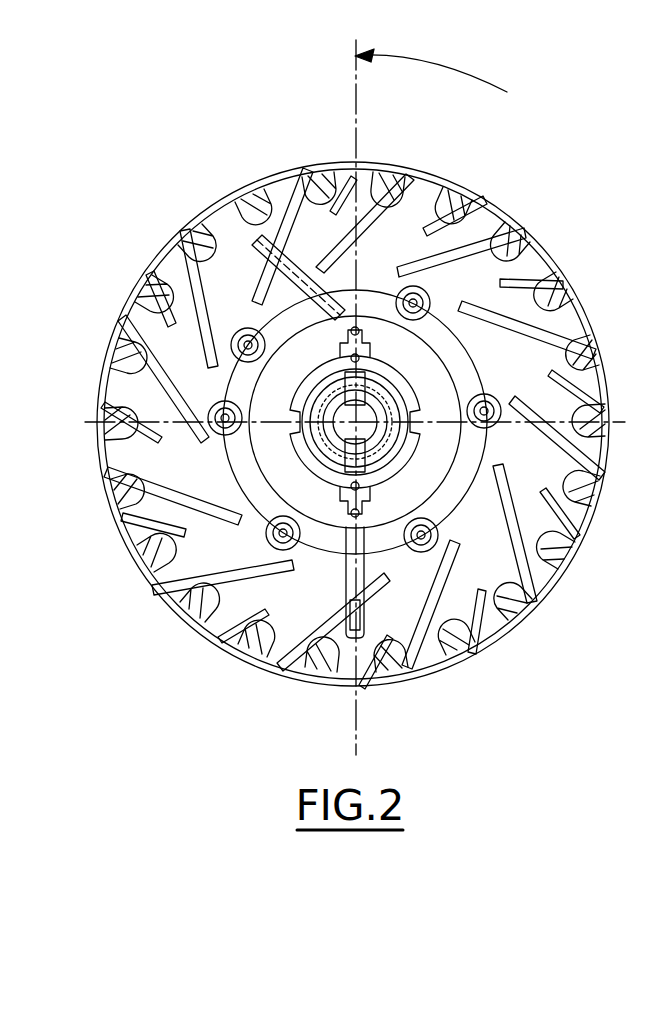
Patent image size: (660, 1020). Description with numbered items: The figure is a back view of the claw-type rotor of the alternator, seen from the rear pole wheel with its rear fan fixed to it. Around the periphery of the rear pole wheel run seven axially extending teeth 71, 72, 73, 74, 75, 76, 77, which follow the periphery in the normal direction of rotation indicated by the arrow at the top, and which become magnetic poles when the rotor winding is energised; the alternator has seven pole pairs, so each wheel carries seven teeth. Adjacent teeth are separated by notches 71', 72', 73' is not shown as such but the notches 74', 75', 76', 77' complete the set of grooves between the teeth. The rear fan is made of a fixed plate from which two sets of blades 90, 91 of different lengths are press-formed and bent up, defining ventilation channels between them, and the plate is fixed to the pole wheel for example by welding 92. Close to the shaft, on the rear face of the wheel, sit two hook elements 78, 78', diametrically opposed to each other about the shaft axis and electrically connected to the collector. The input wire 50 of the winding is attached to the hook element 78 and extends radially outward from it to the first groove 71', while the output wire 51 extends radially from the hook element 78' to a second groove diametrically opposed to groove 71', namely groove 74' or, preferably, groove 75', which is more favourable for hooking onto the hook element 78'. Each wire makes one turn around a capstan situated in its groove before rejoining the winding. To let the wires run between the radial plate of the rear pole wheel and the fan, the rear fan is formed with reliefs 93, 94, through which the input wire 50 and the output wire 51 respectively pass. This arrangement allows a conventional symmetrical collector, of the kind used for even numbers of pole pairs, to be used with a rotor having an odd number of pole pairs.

The input wire 50 is at (420, 683).
The output wire 51 is at (320, 200).
The tooth 71 is at (470, 621).
The notch 71' is at (394, 688).
The tooth 72 is at (579, 474).
The notch 72' is at (559, 550).
The tooth 73 is at (547, 247).
The tooth 74 is at (365, 182).
The notch 74' is at (489, 171).
The tooth 75 is at (183, 264).
The notch 75' is at (276, 198).
The tooth 76 is at (149, 504).
The notch 76' is at (139, 354).
The tooth 77 is at (295, 652).
The notch 77' is at (198, 607).
The hook element 78 is at (444, 509).
The hook element 78' is at (450, 332).
The blades 90 is at (237, 653).
The blades 91 is at (165, 533).
The welding 92 is at (540, 237).
The relief 93 is at (432, 200).
The relief 94 is at (283, 660).